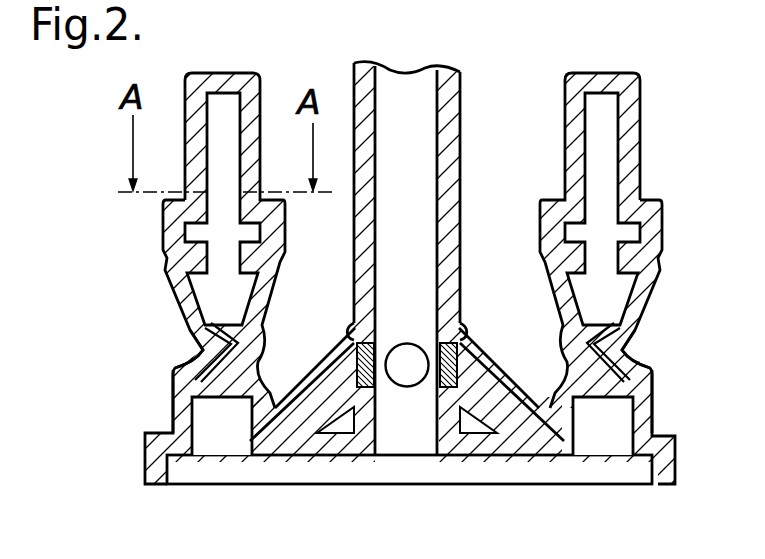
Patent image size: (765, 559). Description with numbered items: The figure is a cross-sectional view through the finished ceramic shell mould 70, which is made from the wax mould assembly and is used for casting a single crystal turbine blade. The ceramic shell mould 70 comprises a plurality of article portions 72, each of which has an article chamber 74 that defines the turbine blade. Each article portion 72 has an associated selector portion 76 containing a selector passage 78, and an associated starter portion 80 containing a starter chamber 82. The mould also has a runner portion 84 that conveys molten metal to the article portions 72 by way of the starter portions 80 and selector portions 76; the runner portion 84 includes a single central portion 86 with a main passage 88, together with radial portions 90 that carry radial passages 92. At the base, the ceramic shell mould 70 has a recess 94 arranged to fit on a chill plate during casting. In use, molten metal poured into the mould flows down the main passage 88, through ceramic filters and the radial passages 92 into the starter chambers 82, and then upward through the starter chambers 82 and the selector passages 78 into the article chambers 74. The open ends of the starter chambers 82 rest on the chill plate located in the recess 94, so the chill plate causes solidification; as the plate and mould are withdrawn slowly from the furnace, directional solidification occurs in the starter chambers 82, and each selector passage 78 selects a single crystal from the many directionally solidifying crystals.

The ceramic shell mould 70 is at (409, 259).
The article portion 72 is at (630, 127).
The article chamber 74 is at (596, 162).
The selector portion 76 is at (634, 356).
The selector passage 78 is at (636, 367).
The starter portion 80 is at (638, 407).
The starter chamber 82 is at (610, 442).
The runner portion 84 is at (444, 245).
The central portion 86 is at (447, 223).
The main passage 88 is at (415, 178).
The radial portion 90 is at (499, 377).
The radial passage 92 is at (522, 417).
The recess 94 is at (630, 468).